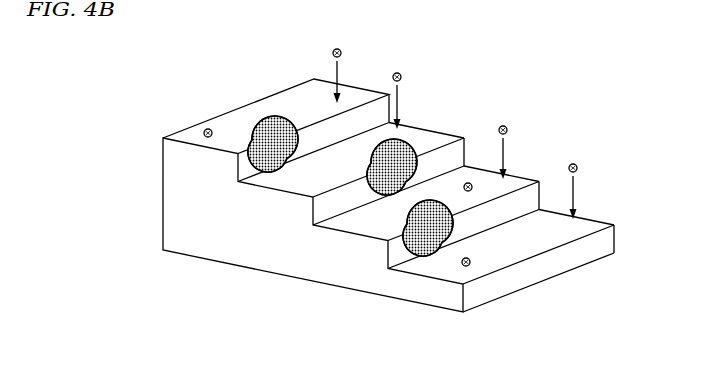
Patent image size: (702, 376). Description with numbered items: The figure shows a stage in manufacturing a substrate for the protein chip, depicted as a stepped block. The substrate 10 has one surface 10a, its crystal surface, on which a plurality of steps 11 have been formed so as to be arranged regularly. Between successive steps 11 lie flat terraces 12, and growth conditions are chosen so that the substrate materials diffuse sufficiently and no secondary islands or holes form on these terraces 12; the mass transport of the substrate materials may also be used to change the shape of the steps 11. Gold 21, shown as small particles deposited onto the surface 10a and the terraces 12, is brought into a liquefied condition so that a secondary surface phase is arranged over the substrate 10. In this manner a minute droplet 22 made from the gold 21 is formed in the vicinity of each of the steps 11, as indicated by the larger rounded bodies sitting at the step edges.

The substrate 10 is at (172, 192).
The one surface of the substrate 10a is at (212, 89).
The steps 11 is at (245, 178).
The terraces 12 is at (437, 136).
The gold 21 is at (204, 131).
The minute droplet 22 is at (257, 121).